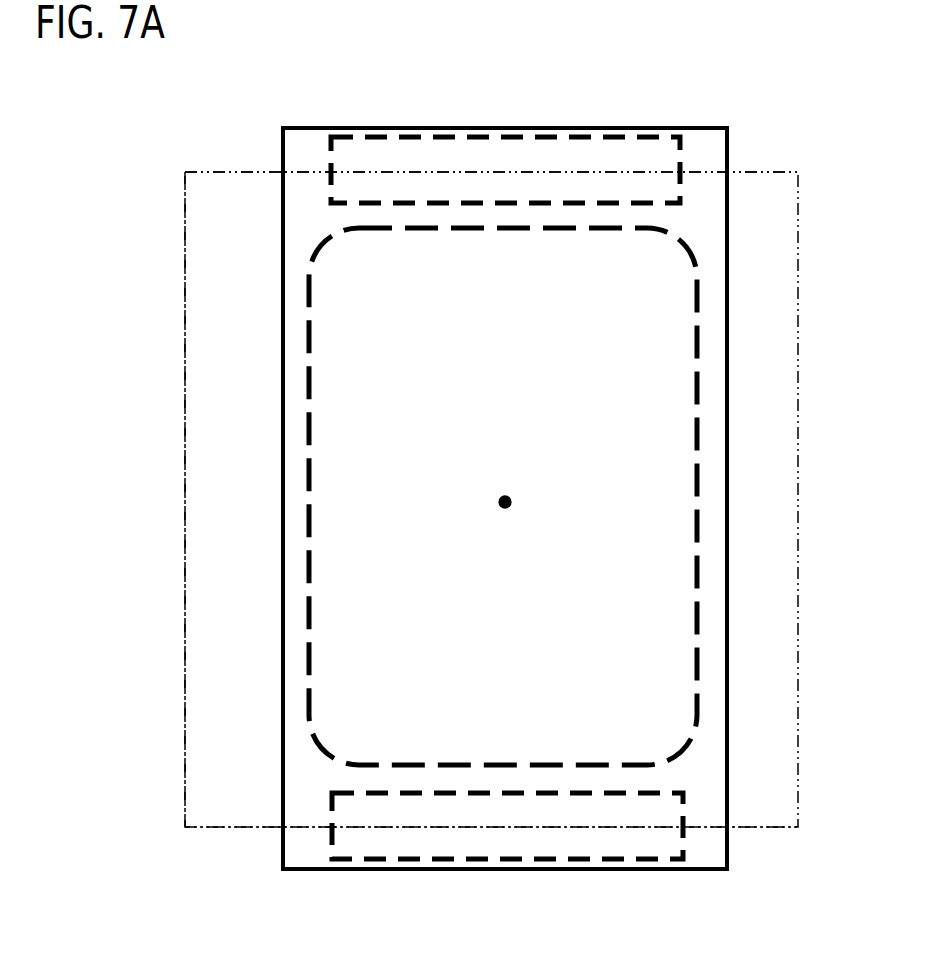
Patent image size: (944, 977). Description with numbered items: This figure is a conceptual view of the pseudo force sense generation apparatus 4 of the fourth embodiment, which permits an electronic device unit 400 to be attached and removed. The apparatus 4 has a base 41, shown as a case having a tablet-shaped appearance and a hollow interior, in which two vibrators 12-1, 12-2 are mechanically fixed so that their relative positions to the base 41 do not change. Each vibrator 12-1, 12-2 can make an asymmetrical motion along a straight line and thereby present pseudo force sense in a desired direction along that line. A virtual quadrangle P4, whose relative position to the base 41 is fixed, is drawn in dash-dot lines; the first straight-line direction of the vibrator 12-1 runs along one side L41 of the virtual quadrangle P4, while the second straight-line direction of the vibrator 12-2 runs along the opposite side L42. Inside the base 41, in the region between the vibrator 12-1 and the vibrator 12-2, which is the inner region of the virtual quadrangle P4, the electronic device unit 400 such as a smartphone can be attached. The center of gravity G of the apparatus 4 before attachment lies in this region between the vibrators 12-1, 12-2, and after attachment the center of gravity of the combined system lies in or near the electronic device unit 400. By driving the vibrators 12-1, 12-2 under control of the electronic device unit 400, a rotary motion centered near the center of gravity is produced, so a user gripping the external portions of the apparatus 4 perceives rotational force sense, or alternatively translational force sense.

The base 41 is at (285, 871).
The pseudo force sense generation apparatus 4 is at (838, 198).
The vibrator 12-1 is at (520, 148).
The vibrator 12-2 is at (470, 847).
The electronic device unit 400 is at (345, 460).
The center of gravity G is at (504, 488).
The side L41 is at (491, 156).
The side L42 is at (491, 847).
The virtual quadrangle P4 is at (207, 499).